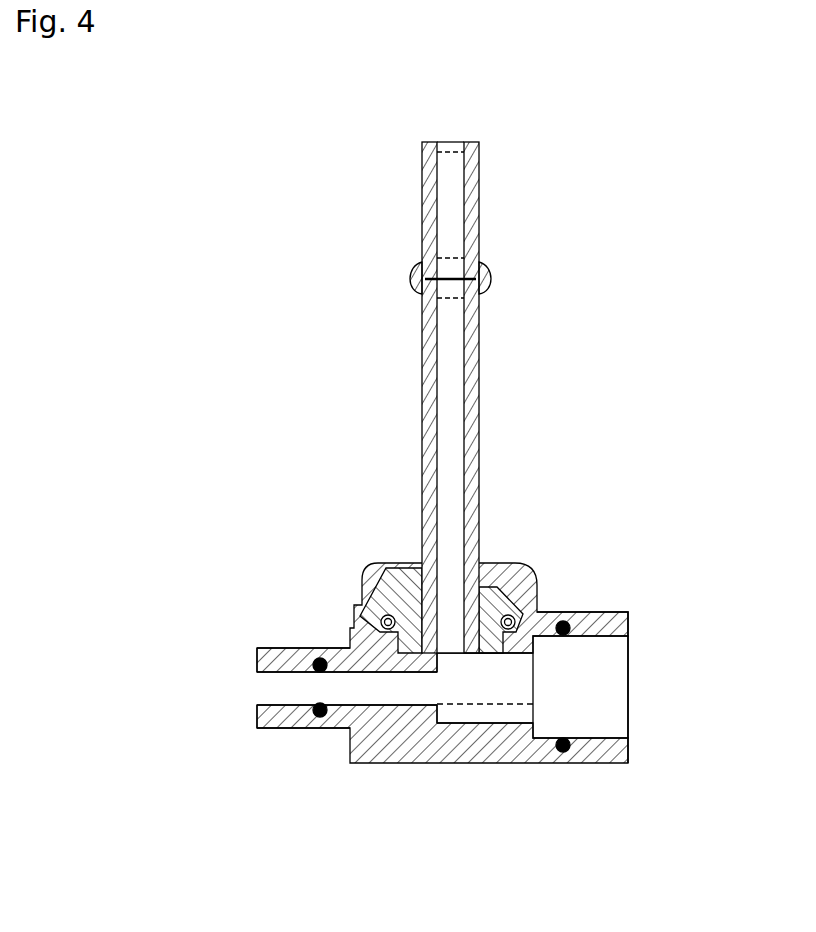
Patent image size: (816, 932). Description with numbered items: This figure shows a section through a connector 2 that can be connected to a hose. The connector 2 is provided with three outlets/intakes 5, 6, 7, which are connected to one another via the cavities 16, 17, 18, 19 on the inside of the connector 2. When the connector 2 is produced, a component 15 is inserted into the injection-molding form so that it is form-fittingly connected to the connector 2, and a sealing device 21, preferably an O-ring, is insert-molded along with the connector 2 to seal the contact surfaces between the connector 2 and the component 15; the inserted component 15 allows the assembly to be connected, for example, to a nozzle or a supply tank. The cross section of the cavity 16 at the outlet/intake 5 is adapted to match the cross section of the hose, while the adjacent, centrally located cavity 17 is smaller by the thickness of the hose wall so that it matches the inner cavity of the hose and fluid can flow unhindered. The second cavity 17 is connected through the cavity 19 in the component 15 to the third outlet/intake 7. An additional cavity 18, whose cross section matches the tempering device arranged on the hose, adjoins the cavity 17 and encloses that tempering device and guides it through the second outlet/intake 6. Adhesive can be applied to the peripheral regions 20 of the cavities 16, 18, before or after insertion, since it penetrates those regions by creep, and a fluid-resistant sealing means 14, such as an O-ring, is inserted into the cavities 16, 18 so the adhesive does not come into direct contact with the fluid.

The connector 2 is at (330, 778).
The outlet/intake 5 is at (650, 702).
The outlet/intake 6 is at (242, 693).
The outlet/intake 7 is at (457, 123).
The sealing means 14 is at (320, 662).
The component 15 is at (427, 460).
The cavity 16 is at (602, 707).
The cavity 17 is at (472, 697).
The cavity 18 is at (387, 693).
The cavity 19 is at (453, 530).
The peripheral regions 20 is at (282, 713).
The sealing device 21 is at (520, 594).